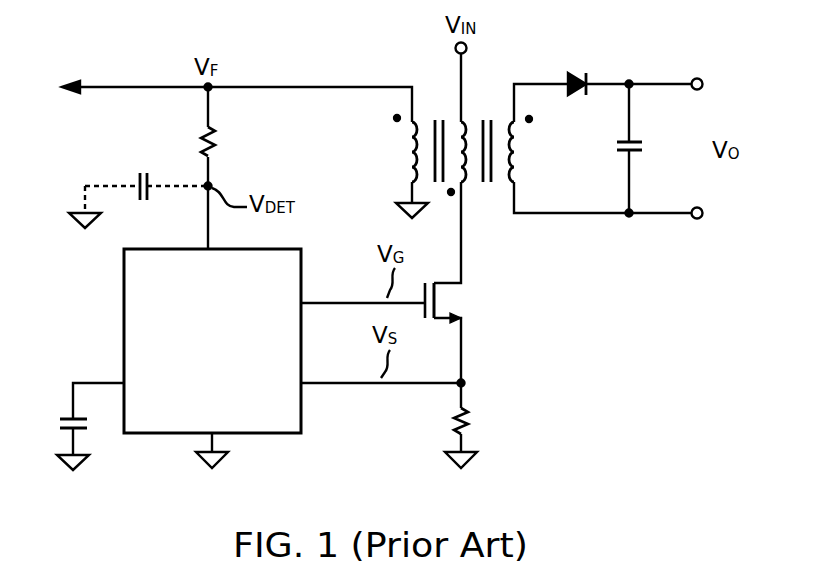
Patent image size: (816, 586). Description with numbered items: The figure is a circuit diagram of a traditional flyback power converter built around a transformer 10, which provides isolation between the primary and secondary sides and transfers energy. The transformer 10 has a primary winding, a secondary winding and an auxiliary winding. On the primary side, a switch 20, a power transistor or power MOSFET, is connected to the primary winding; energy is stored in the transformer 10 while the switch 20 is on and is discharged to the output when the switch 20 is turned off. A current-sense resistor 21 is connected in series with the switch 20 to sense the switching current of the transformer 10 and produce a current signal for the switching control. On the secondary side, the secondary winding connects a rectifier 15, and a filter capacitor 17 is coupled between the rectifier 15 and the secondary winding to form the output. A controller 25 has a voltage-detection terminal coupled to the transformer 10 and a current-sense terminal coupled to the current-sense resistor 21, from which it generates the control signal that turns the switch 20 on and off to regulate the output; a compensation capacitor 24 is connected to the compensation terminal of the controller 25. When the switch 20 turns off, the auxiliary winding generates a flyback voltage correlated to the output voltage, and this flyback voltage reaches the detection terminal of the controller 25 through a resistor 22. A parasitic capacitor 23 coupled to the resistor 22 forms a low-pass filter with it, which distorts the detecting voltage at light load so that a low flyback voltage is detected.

The transformer 10 is at (483, 120).
The rectifier 15 is at (578, 72).
The filter capacitor 17 is at (639, 153).
The switch 20 is at (466, 306).
The current-sense resistor 21 is at (474, 426).
The resistor 22 is at (225, 140).
The parasitic capacitor 23 is at (146, 172).
The compensation capacitor 24 is at (63, 425).
The controller 25 is at (124, 276).